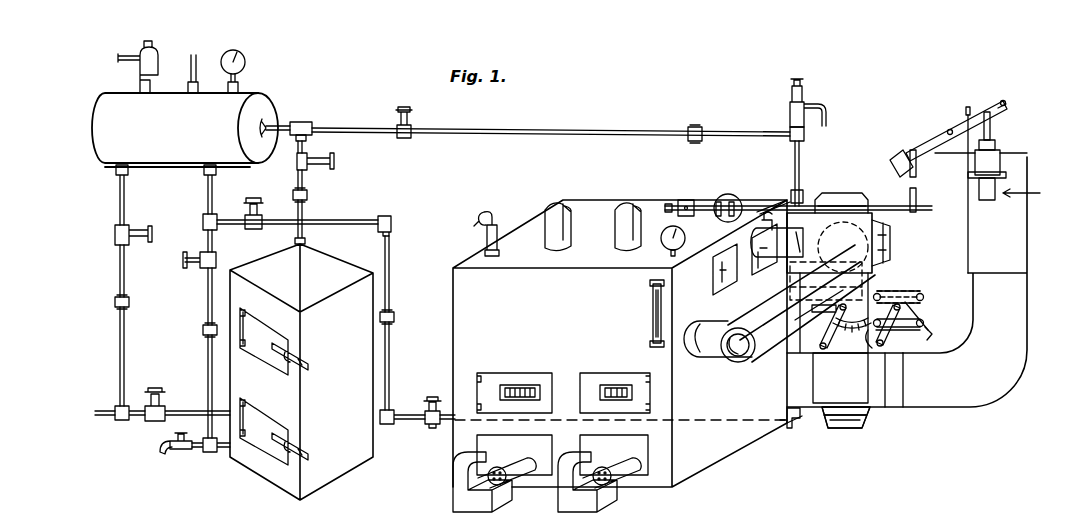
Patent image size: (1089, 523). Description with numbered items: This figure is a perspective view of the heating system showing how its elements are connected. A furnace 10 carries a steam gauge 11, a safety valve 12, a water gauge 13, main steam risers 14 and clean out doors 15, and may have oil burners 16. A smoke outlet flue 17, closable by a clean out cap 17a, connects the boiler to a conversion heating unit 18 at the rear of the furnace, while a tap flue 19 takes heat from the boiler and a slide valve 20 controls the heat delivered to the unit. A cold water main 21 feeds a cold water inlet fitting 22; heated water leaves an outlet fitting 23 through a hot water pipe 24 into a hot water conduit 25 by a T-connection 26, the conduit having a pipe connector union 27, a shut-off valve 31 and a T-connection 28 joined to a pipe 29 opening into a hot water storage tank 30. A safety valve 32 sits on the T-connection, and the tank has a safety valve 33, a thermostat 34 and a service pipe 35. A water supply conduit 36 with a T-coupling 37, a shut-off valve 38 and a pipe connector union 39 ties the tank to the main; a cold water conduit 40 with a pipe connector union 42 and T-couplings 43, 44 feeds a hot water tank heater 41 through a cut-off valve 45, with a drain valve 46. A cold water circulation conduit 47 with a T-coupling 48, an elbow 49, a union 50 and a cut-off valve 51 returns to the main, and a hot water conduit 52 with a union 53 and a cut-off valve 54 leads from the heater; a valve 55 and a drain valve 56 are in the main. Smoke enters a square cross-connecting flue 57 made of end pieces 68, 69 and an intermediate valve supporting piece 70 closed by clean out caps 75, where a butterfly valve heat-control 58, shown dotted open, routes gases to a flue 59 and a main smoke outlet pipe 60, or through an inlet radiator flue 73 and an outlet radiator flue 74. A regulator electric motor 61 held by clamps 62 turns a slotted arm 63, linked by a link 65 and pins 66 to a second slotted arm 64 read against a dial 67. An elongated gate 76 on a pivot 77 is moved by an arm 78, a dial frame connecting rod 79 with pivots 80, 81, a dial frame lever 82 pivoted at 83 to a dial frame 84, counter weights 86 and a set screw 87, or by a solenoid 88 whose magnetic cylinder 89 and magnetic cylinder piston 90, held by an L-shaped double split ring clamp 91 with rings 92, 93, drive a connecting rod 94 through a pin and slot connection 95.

The furnace 10 is at (715, 460).
The steam gauge 11 is at (665, 247).
The safety valve 12 is at (495, 222).
The water gauge 13 is at (652, 320).
The main steam risers 14 is at (573, 240).
The clean out doors 15 is at (724, 280).
The oil burners 16 is at (565, 500).
The smoke outlet flue 17 is at (756, 318).
The clean out cap 17a is at (742, 362).
The conversion heating unit 18 is at (893, 272).
The tap flue 19 is at (770, 252).
The slide valve 20 is at (758, 218).
The cold water main 21 is at (104, 420).
The cold water inlet fitting 22 is at (800, 425).
The outlet fitting 23 is at (805, 192).
The hot water pipe 24 is at (793, 166).
The hot water conduit 25 is at (658, 130).
The T-connection 26 is at (806, 135).
The pipe connector union 27 is at (695, 126).
The T-connection 28 is at (308, 121).
The pipe 29 is at (287, 124).
The hot water storage tank 30 is at (95, 143).
The shut-off valve 31 is at (411, 124).
The safety valve 32 is at (805, 90).
The safety valve 33 is at (138, 66).
The thermostat 34 is at (247, 60).
The service pipe 35 is at (198, 60).
The water supply conduit 36 is at (118, 283).
The T-coupling 37 is at (114, 408).
The shut-off valve 38 is at (130, 232).
The pipe connector union 39 is at (116, 307).
The cold water conduit 40 is at (208, 390).
The hot water tank heater 41 is at (342, 473).
The pipe connector union 42 is at (203, 330).
The T-coupling 43 is at (202, 218).
The T-coupling 44 is at (210, 453).
The cut-off valve 45 is at (199, 268).
The drain valve 46 is at (168, 450).
The cold water circulation conduit 47 is at (392, 262).
The T-coupling 48 is at (383, 425).
The elbow 49 is at (390, 220).
The union 50 is at (396, 316).
The cut-off valve 51 is at (270, 200).
The hot water conduit 52 is at (304, 212).
The union 53 is at (308, 190).
The cut-off valve 54 is at (318, 160).
The valve 55 is at (150, 396).
The drain valve 56 is at (440, 395).
The cross-connecting flue 57 is at (880, 406).
The butterfly valve heat-control 58 is at (822, 290).
The flue 59 is at (948, 405).
The main smoke outlet pipe 60 is at (1003, 110).
The regulator electric motor 61 is at (920, 280).
The clamps 62 is at (932, 310).
The slotted arm 63 is at (930, 338).
The second slotted arm 64 is at (845, 368).
The link 65 is at (858, 340).
The pins 66 is at (822, 340).
The dial 67 is at (888, 370).
The end piece 68 is at (892, 222).
The end piece 69 is at (866, 412).
The intermediate valve supporting piece 70 is at (806, 316).
The inlet radiator flue 73 is at (832, 230).
The outlet radiator flue 74 is at (790, 392).
The clean out caps 75 is at (858, 192).
The elongated gate 76 is at (950, 126).
The pivot 77 is at (946, 130).
The arm 78 is at (1003, 98).
The dial frame connecting rod 79 is at (910, 186).
The pivot 80 is at (906, 152).
The pivot 81 is at (917, 168).
The dial frame lever 82 is at (800, 206).
The pivot 83 is at (716, 202).
The dial frame 84 is at (728, 194).
The counter weights 86 is at (688, 200).
The set screw 87 is at (676, 202).
The solenoid 88 is at (1036, 194).
The magnetic cylinder 89 is at (1001, 158).
The magnetic cylinder piston 90 is at (996, 145).
The L-shaped double split ring clamp 91 is at (968, 178).
The ring 92 is at (968, 106).
The ring 93 is at (986, 200).
The connecting rod 94 is at (991, 128).
The pin and slot connection 95 is at (1008, 104).